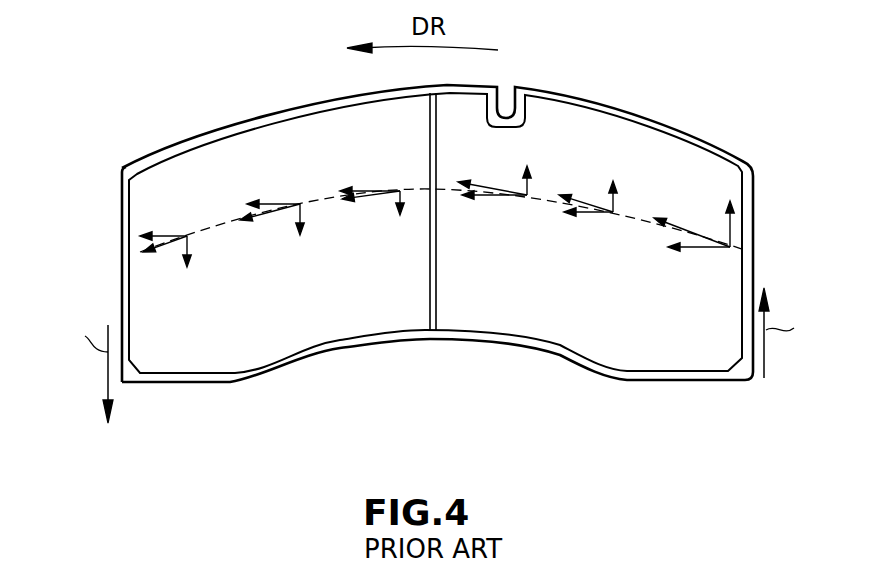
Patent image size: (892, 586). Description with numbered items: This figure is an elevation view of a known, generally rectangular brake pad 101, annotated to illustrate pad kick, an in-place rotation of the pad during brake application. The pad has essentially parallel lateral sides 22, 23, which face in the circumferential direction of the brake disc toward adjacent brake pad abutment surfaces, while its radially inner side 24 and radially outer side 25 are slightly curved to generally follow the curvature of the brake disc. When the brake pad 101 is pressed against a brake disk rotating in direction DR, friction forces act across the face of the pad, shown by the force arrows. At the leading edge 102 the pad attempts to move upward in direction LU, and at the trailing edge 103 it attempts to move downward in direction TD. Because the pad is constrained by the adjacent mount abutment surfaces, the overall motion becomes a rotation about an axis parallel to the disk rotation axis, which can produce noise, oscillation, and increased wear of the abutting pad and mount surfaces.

The lateral side 22 is at (400, 233).
The lateral side 23 is at (753, 210).
The radially inner side 24 is at (228, 383).
The radially outer side 25 is at (650, 115).
The brake pad 101 is at (173, 140).
The leading edge 102 is at (756, 382).
The trailing edge 103 is at (104, 384).